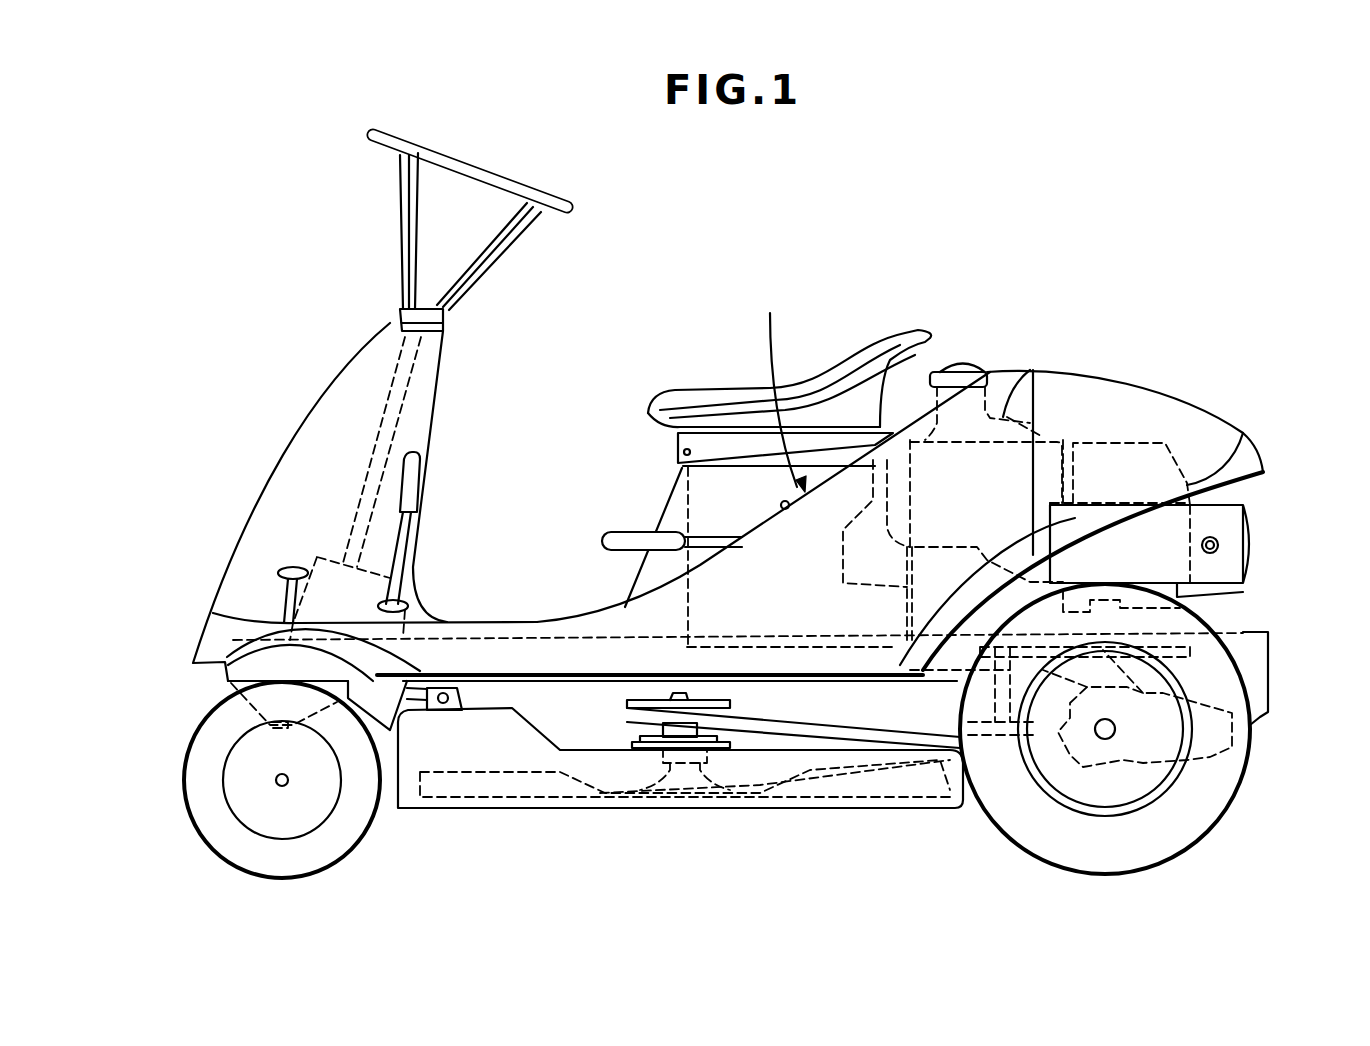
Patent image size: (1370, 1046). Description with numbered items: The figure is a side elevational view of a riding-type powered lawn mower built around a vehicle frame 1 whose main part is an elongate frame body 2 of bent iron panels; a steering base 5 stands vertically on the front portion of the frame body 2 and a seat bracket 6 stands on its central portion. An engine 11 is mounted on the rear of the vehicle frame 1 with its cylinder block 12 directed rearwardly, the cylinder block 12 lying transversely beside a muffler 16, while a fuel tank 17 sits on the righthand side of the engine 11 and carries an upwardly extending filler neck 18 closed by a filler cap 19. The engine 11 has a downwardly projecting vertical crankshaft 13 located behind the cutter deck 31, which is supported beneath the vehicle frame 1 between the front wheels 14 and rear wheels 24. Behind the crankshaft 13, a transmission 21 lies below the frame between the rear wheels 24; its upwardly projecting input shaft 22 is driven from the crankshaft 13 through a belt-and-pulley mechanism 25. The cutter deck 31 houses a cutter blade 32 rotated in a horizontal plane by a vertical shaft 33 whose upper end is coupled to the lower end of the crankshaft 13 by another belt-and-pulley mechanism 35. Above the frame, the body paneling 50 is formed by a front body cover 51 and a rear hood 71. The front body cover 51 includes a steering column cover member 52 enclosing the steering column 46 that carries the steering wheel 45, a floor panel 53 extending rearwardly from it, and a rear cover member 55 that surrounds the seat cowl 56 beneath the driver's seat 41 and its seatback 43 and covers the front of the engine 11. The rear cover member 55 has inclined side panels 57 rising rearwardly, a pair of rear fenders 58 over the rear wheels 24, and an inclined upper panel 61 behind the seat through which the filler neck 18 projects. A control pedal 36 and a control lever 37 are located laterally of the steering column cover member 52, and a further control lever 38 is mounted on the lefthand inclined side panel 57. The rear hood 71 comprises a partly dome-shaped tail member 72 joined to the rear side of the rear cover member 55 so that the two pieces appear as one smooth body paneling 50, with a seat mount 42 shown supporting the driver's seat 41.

The vehicle frame 1 is at (533, 637).
The frame body 2 is at (242, 665).
The steering base 5 is at (332, 558).
The seat bracket 6 is at (692, 493).
The engine 11 is at (862, 583).
The cylinder block 12 is at (1245, 430).
The crankshaft 13 is at (993, 707).
The front wheels 14 is at (207, 843).
The muffler 16 is at (1240, 523).
The fuel tank 17 is at (1047, 352).
The filler neck 18 is at (937, 400).
The filler cap 19 is at (957, 370).
The transmission 21 is at (1210, 757).
The input shaft 22 is at (1167, 640).
The rear wheels 24 is at (1193, 807).
The belt-and-pulley mechanism 25 is at (1067, 583).
The cutter deck 31 is at (612, 808).
The cutter blade 32 is at (870, 798).
The vertical shaft 33 is at (670, 768).
The belt-and-pulley mechanism 35 is at (793, 720).
The control pedal 36 is at (293, 569).
The control lever 37 is at (413, 473).
The control lever 38 is at (613, 555).
The driver's seat 41 is at (718, 388).
The seat mount 42 is at (730, 453).
The seatback 43 is at (893, 332).
The steering wheel 45 is at (514, 182).
The steering column 46 is at (380, 427).
The body paneling 50 is at (779, 386).
The front body cover 51 is at (248, 502).
The steering column cover member 52 is at (300, 432).
The floor panel 53 is at (477, 620).
The rear cover member 55 is at (835, 473).
The seat cowl 56 is at (660, 523).
The inclined side panels 57 is at (788, 510).
The rear fenders 58 is at (968, 583).
The inclined upper panel 61 is at (980, 370).
The rear hood 71 is at (1162, 386).
The tail member 72 is at (1193, 423).